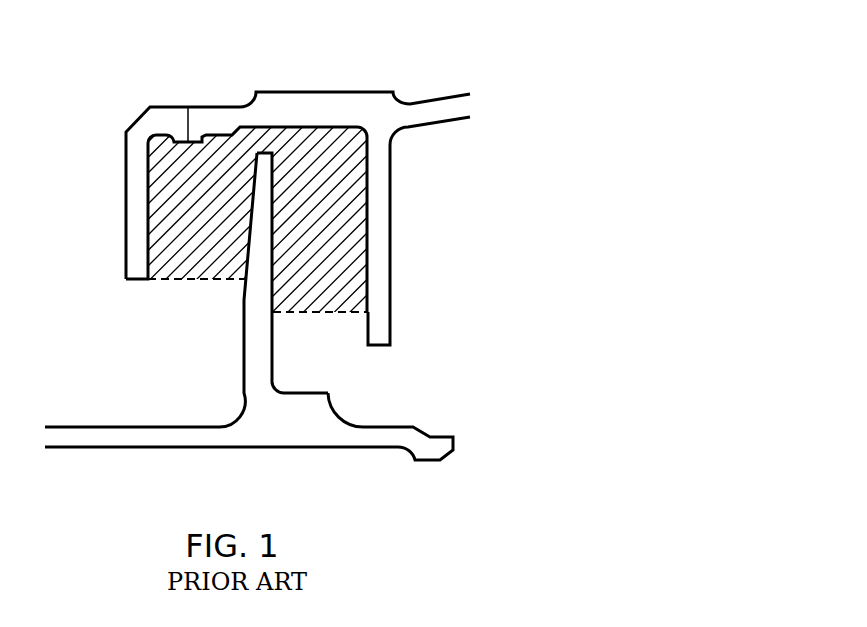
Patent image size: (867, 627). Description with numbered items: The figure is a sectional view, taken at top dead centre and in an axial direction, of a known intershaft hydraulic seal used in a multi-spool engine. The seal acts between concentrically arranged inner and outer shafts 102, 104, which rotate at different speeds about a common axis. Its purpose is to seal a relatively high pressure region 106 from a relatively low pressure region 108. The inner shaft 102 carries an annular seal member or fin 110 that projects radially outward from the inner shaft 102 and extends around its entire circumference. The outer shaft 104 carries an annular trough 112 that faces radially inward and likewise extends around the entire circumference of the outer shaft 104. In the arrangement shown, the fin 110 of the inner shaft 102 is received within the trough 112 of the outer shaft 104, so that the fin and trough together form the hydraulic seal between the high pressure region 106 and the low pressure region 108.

The inner shaft 102 is at (440, 445).
The outer shaft 104 is at (430, 108).
The high pressure region 106 is at (88, 351).
The low pressure region 108 is at (360, 377).
The fin 110 is at (257, 333).
The trough 112 is at (138, 215).